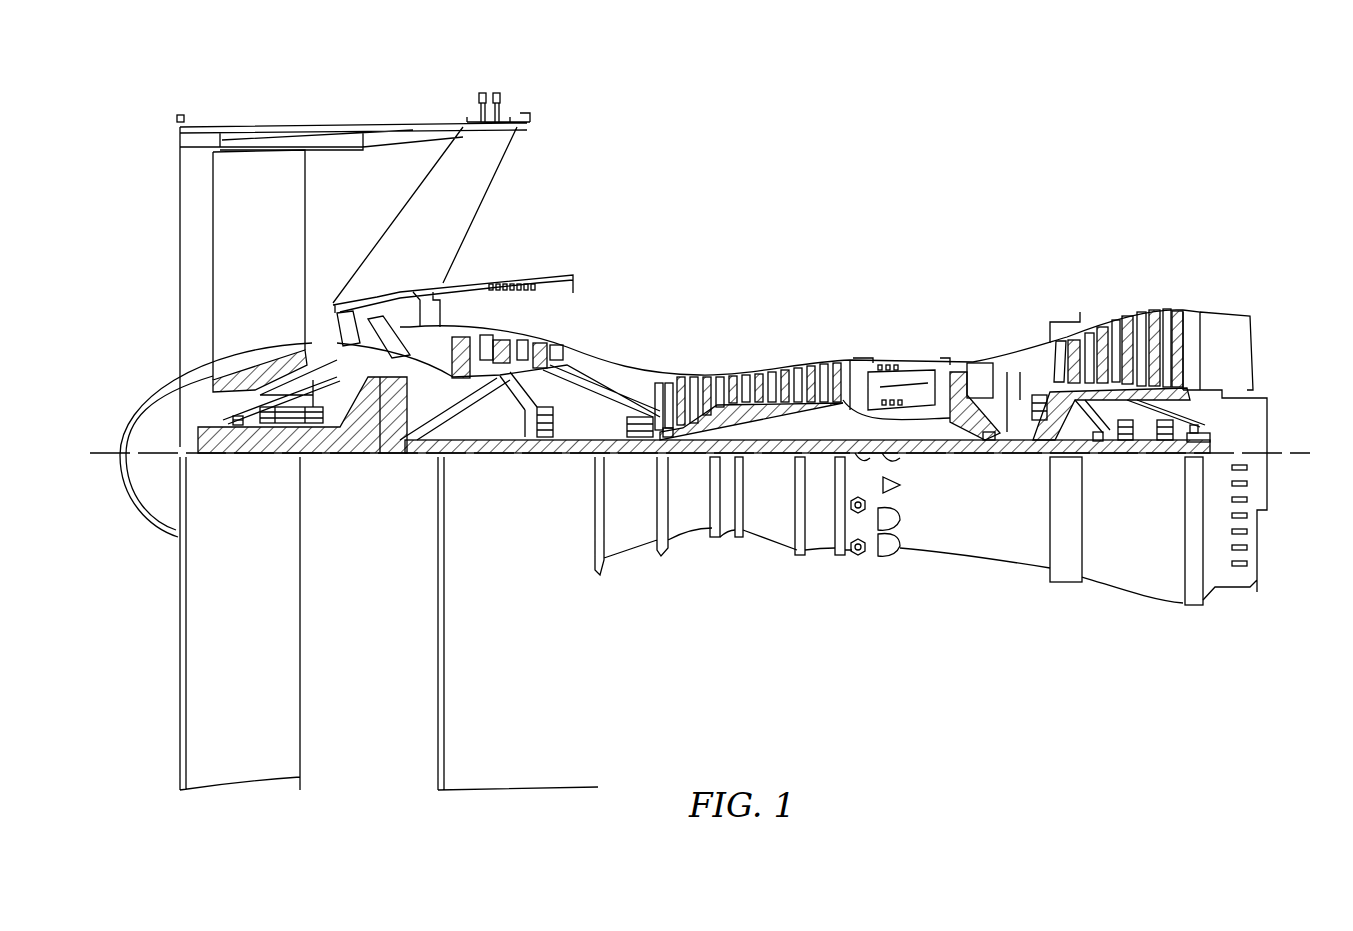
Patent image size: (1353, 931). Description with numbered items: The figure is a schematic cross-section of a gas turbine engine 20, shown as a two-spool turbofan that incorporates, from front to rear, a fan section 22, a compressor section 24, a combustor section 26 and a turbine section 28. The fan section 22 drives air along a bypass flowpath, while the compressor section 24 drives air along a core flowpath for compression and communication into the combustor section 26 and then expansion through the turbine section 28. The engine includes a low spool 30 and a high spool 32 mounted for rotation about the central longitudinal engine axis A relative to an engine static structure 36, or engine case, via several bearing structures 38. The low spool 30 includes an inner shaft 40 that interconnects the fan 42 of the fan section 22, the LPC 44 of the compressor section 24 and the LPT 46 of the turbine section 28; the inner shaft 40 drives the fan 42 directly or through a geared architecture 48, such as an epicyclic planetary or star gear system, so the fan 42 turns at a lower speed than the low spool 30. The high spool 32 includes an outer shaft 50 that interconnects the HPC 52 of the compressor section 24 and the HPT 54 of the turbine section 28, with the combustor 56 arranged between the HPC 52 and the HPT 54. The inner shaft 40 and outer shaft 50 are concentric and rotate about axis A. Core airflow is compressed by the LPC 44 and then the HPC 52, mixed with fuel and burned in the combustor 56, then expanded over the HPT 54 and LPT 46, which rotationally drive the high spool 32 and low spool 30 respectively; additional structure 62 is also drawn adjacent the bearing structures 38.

The gas turbine engine 20 is at (1017, 173).
The fan section 22 is at (433, 103).
The compressor section 24 is at (443, 241).
The combustor section 26 is at (960, 241).
The turbine section 28 is at (1193, 241).
The low spool 30 is at (775, 458).
The high spool 32 is at (820, 420).
The engine static structure 36 is at (822, 552).
The bearing structures 38 is at (468, 512).
The inner shaft 40 is at (620, 456).
The fan 42 is at (268, 248).
The low pressure compressor (LPC) 44 is at (518, 338).
The low pressure turbine (LPT) 46 is at (1110, 330).
The geared architecture 48 is at (385, 425).
The outer shaft 50 is at (893, 447).
The high pressure compressor (HPC) 52 is at (753, 417).
The high pressure turbine (HPT) 54 is at (983, 370).
The combustor 56 is at (904, 388).
The bearing supports 62 is at (677, 450).
The engine central longitudinal axis A is at (1288, 440).